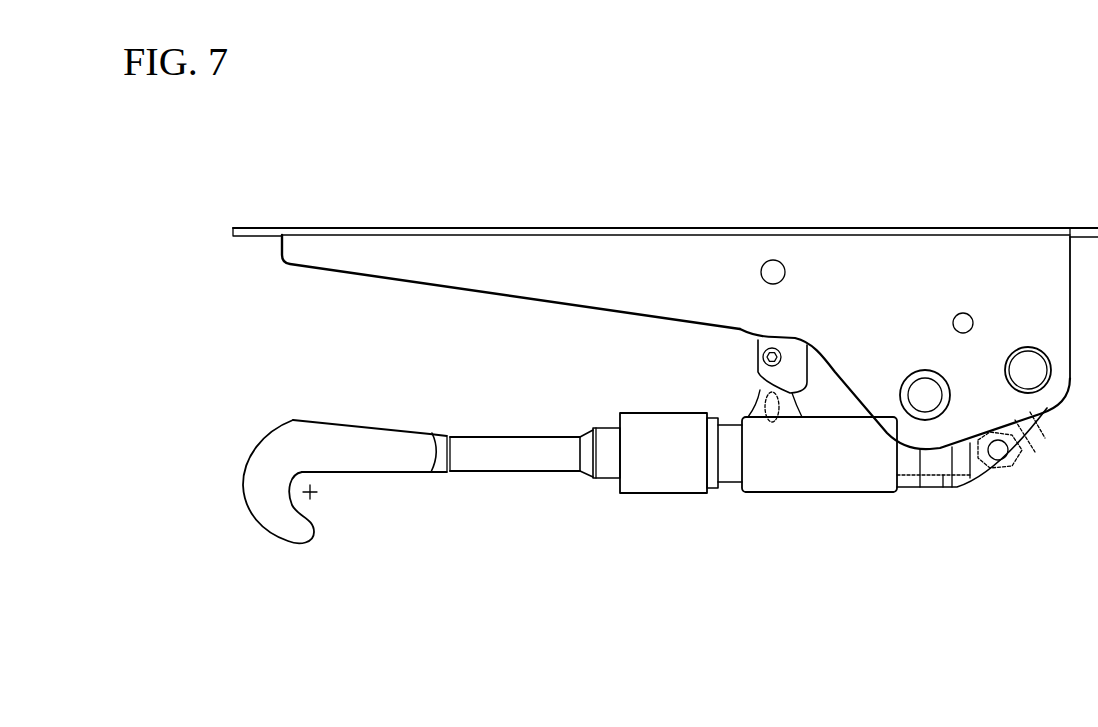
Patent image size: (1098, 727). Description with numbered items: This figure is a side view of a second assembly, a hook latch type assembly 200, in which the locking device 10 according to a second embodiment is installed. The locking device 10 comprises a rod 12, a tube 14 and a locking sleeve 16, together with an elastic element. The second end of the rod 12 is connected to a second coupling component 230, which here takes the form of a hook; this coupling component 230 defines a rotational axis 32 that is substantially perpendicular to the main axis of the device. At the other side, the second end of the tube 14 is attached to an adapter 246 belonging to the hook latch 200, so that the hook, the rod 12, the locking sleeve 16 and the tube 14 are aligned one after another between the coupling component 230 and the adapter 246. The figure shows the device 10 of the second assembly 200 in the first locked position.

The locking device 10 is at (536, 471).
The rod 12 is at (590, 512).
The tube 14 is at (728, 507).
The locking sleeve 16 is at (662, 510).
The rotational axis 32 is at (313, 500).
The second hook latch type assembly 200 is at (665, 450).
The second coupling component 230 is at (257, 547).
The adapter 246 is at (785, 494).